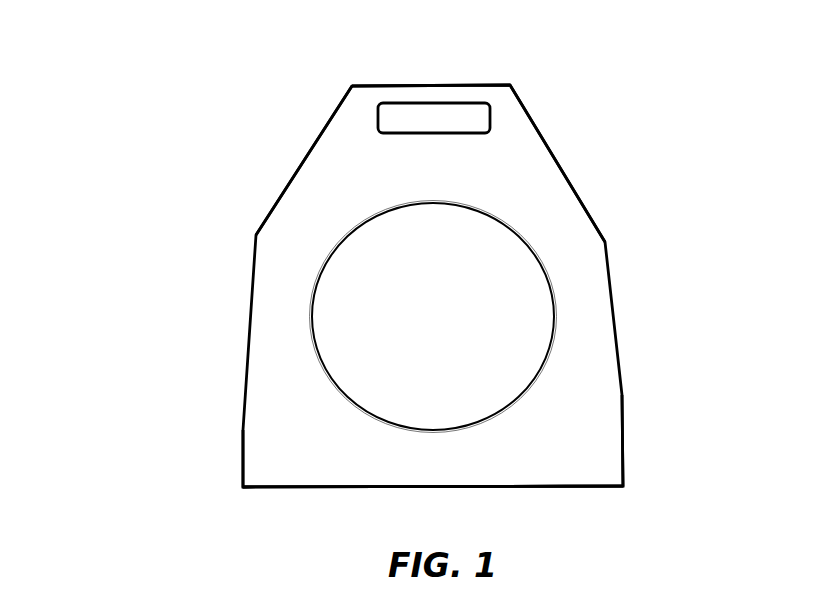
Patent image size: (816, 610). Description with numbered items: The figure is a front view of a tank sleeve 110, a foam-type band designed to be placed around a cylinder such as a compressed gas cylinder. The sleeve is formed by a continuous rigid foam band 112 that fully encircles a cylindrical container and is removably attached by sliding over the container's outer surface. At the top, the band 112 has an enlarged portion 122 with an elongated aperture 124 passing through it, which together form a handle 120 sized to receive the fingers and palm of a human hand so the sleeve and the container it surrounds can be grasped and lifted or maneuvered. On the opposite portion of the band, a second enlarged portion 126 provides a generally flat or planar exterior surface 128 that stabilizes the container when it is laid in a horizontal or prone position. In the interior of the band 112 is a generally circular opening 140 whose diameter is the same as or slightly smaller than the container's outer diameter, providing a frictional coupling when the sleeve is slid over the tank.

The tank sleeve 110 is at (481, 282).
The band 112 is at (578, 305).
The handle 120 is at (318, 112).
The enlarged portion 122 is at (233, 77).
The aperture 124 is at (383, 103).
The second enlarged portion 126 is at (197, 405).
The planar exterior surface 128 is at (580, 486).
The circular opening 140 is at (312, 325).